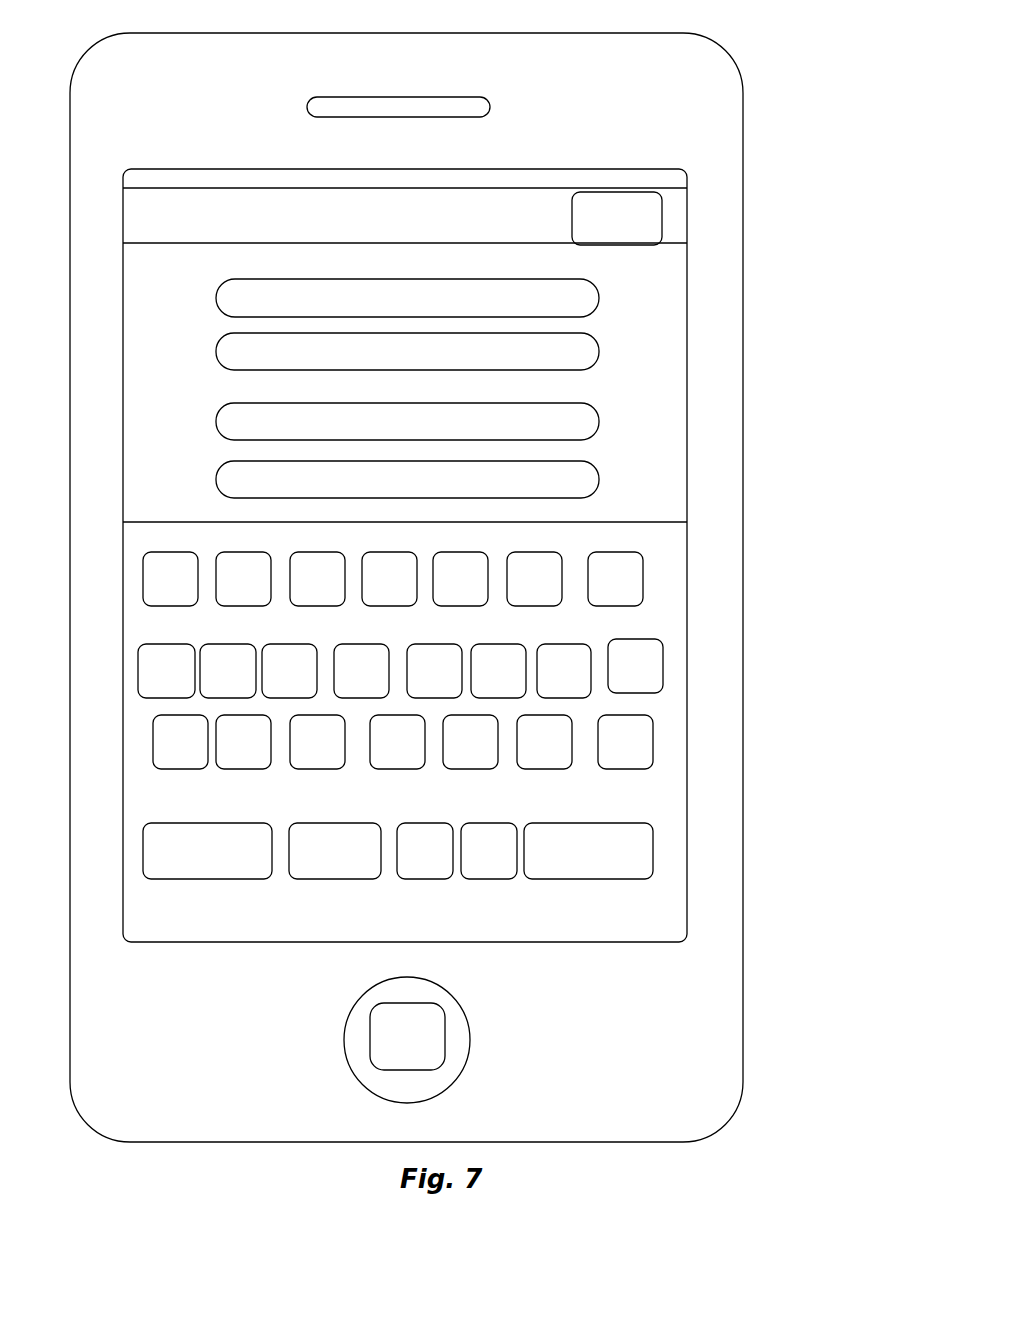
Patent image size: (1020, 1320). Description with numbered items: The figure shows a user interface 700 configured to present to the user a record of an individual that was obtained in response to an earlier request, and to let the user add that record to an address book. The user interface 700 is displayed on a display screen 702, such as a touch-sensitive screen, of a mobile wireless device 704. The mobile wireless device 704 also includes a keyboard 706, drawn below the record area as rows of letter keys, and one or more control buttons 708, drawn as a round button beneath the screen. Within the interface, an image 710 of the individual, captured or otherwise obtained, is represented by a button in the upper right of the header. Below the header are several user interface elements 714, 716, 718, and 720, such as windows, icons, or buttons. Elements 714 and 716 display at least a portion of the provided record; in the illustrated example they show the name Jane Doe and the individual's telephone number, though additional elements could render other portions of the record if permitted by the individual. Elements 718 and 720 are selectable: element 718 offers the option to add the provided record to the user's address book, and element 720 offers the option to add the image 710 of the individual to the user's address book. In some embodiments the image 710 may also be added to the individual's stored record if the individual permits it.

The user interface 700 is at (774, 88).
The display screen 702 is at (688, 520).
The mobile wireless device 704 is at (743, 604).
The keyboard 706 is at (665, 675).
The control button 708 is at (475, 1038).
The image 710 is at (665, 217).
The user interface element 714 is at (597, 297).
The user interface element 716 is at (597, 352).
The user interface element 718 is at (600, 420).
The user interface element 720 is at (598, 478).